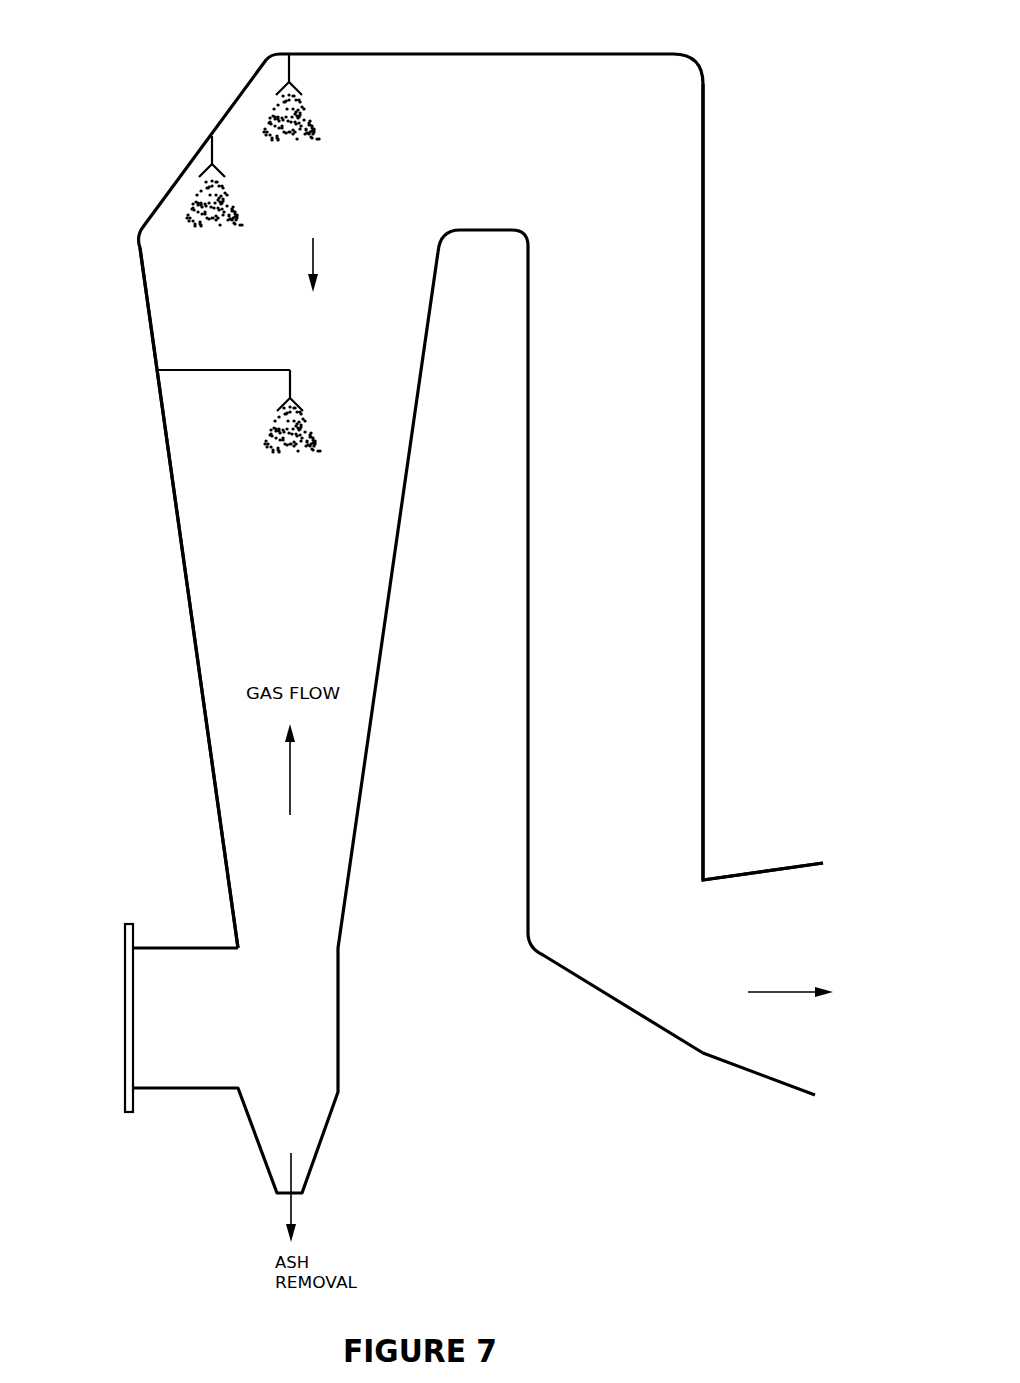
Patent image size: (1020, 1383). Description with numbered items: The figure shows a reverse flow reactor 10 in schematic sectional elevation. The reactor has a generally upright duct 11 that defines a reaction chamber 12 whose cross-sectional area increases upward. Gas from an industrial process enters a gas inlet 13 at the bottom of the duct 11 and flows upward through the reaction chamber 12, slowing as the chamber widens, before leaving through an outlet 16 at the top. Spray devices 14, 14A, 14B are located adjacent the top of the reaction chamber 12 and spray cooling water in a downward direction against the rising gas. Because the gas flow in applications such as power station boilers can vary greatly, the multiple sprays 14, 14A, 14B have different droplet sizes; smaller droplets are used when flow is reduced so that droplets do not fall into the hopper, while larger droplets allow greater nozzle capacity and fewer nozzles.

The reverse flow reactor 10 is at (428, 623).
The duct 11 is at (188, 598).
The reaction chamber 12 is at (308, 332).
The gas inlet 13 is at (123, 1049).
The spray device 14 is at (277, 80).
The spray device 14A is at (203, 160).
The spray device 14B is at (255, 417).
The outlet 16 is at (543, 163).